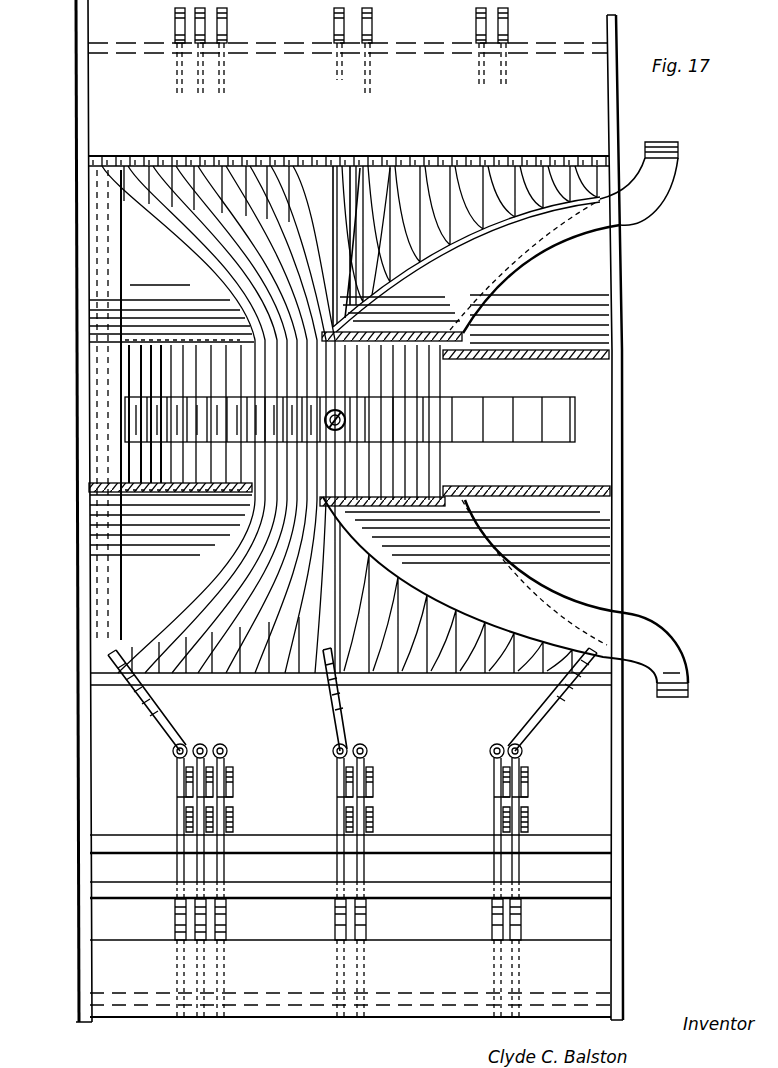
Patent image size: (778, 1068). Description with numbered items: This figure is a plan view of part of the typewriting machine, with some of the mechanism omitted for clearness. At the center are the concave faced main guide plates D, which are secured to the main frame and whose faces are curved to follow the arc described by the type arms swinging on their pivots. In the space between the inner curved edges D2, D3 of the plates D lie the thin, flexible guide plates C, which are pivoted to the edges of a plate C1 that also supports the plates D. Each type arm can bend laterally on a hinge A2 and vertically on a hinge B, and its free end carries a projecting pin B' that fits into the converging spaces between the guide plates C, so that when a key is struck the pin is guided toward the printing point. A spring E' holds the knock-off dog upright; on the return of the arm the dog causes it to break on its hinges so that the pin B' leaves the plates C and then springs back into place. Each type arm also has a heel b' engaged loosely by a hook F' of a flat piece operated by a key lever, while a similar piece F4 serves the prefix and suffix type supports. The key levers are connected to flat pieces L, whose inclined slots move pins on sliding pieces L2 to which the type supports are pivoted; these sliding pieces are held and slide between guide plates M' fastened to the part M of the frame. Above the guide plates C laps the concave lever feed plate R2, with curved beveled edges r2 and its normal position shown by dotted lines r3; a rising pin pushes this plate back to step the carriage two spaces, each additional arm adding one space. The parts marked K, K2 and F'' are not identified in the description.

The frame uprights K2 is at (78, 100).
The frame K is at (76, 530).
The prefix and suffix operating piece F4 is at (180, 45).
The main guide plate D is at (88, 325).
The inner curved edge of main guide plate D2 is at (385, 270).
The inner curved edge of main guide plate D3 is at (180, 255).
The lever feed plate R2 is at (569, 448).
The curved beveled edge r2 is at (548, 215).
The normal-position outline of feed plate r3 is at (645, 162).
The guide plate C is at (160, 398).
The spring E' is at (347, 419).
The plate C1 is at (437, 675).
The projecting pin B' is at (316, 699).
The hinge B is at (340, 744).
The hinge A2 is at (220, 742).
The hook F' is at (325, 828).
The rod blocks F'' is at (364, 802).
The heel b' is at (402, 799).
The frame part M is at (350, 858).
The sliding piece L2 is at (178, 872).
The flat piece L is at (175, 918).
The guide plate M' is at (350, 978).